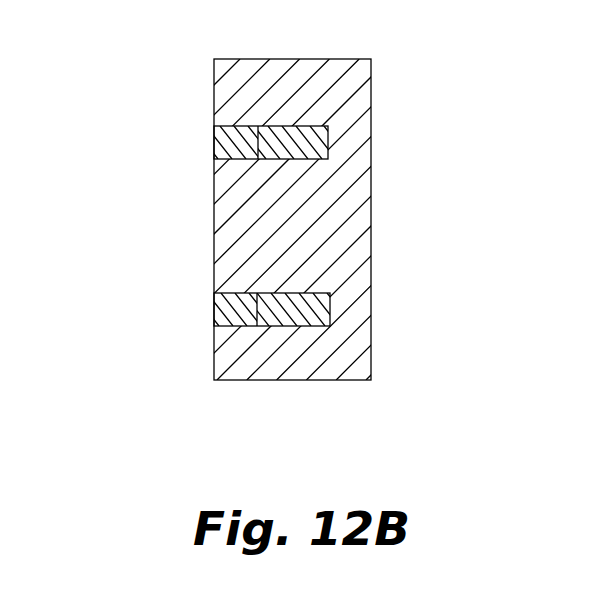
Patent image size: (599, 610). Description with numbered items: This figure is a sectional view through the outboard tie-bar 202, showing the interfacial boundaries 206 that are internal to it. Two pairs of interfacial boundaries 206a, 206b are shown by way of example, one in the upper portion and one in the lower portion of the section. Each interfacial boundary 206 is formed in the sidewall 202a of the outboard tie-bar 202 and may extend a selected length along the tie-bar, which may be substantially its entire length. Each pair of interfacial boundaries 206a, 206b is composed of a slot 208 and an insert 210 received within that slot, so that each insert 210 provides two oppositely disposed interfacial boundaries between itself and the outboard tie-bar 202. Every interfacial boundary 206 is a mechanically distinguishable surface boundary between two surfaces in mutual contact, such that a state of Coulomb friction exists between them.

The outboard tie-bar 202 is at (299, 219).
The sidewall 202a is at (371, 215).
The interfacial boundary 206 is at (201, 277).
The pair of interfacial boundaries 206a is at (194, 149).
The pair of interfacial boundaries 206b is at (204, 324).
The slot 208 is at (325, 140).
The insert 210 is at (214, 135).